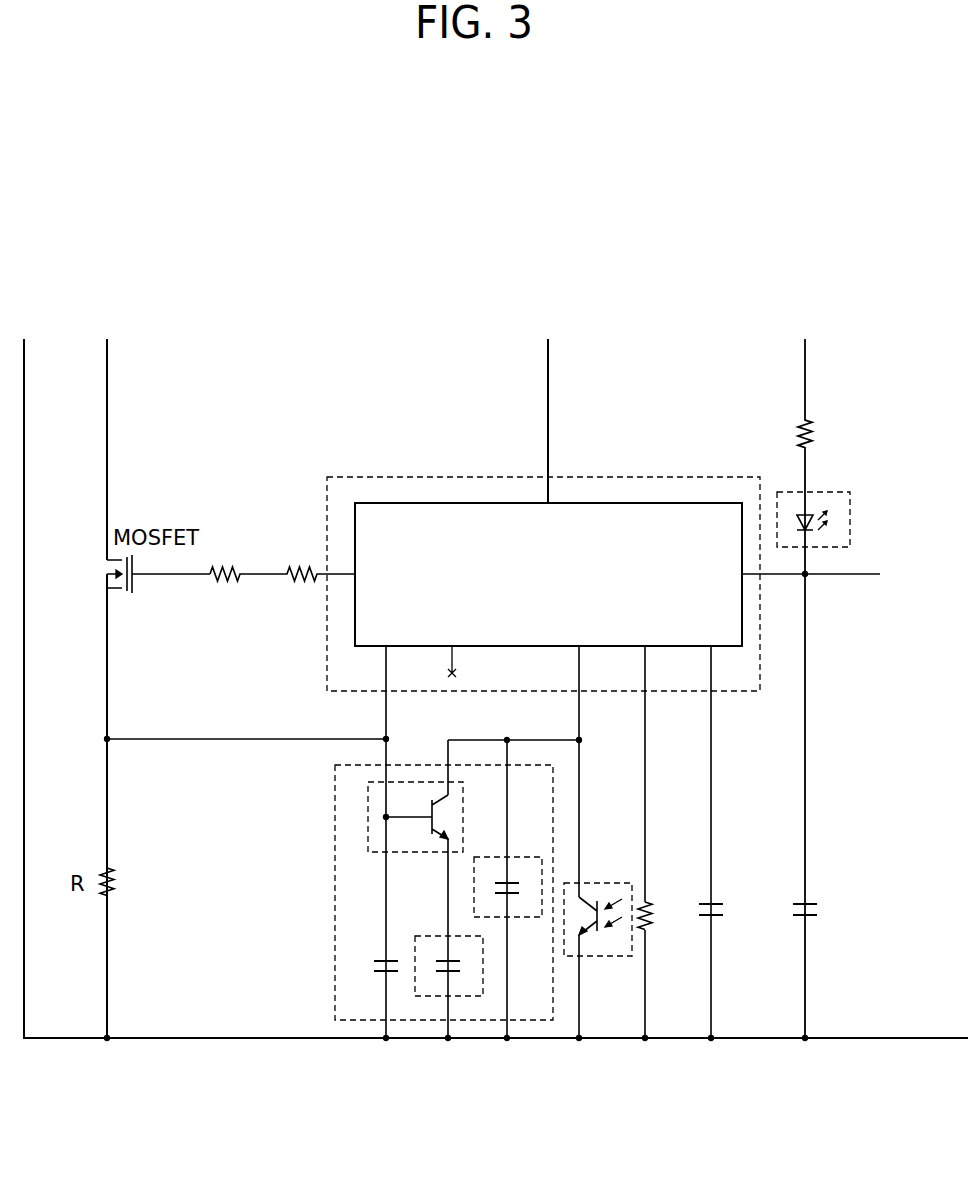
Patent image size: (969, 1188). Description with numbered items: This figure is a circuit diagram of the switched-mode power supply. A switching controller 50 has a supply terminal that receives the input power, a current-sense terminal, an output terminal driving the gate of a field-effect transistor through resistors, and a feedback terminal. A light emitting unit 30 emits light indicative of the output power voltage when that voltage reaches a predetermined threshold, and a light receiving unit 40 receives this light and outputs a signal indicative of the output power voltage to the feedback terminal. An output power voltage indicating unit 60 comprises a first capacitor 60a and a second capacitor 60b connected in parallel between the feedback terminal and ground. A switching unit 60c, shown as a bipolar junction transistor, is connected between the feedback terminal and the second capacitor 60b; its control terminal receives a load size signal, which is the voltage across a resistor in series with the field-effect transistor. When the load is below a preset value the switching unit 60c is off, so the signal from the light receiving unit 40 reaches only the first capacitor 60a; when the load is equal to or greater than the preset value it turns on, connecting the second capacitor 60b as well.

The switching controller 50 is at (377, 476).
The light emitting unit 30 is at (852, 520).
The output power voltage indicating unit 60 is at (395, 936).
The switching unit 60c is at (335, 815).
The second capacitor 60b is at (431, 998).
The first capacitor 60a is at (533, 918).
The light receiving unit 40 is at (607, 957).